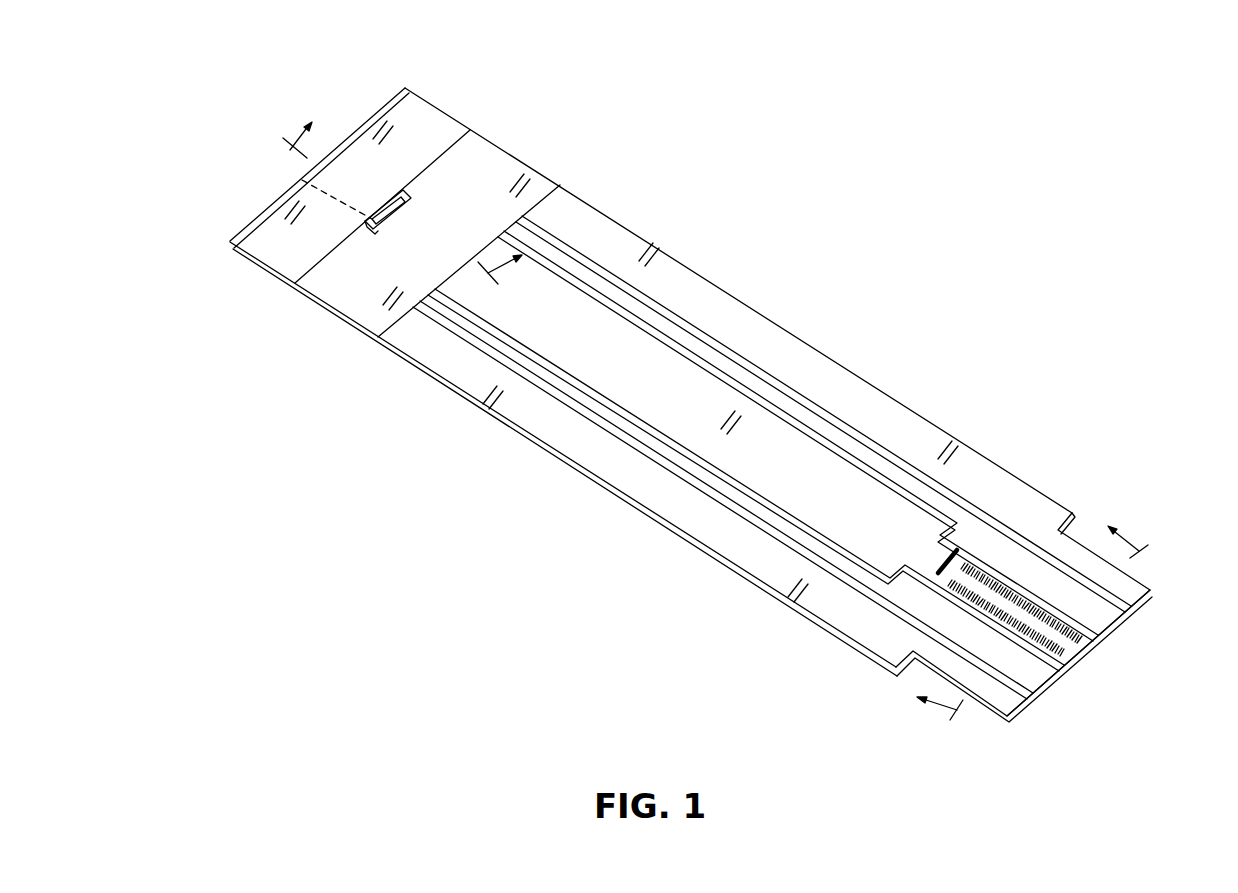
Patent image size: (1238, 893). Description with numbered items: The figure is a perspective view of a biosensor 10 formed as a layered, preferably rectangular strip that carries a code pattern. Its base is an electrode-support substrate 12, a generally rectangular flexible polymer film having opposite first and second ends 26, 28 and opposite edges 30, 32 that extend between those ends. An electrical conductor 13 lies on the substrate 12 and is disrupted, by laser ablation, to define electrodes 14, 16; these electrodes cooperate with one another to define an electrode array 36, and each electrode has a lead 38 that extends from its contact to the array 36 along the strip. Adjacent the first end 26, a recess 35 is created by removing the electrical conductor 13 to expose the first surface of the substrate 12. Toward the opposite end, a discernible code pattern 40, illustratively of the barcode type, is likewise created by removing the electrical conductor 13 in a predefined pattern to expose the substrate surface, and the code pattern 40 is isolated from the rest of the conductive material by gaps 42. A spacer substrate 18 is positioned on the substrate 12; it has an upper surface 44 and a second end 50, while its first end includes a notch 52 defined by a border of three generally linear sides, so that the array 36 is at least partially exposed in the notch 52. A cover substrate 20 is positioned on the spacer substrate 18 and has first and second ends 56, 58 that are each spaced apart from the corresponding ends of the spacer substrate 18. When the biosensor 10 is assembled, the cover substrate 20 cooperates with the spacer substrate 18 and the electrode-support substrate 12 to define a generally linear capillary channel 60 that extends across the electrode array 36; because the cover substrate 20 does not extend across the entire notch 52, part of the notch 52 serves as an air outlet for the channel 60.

The biosensor 10 is at (745, 188).
The electrode-support substrate 12 is at (823, 700).
The electrical conductor 13 is at (797, 368).
The electrode 14 is at (766, 530).
The electrode 16 is at (850, 421).
The spacer substrate 18 is at (497, 165).
The cover substrate 20 is at (421, 117).
The first end 26 is at (231, 231).
The second end 28 is at (1114, 627).
The edge 30 is at (621, 495).
The edge 32 is at (898, 403).
The recess 35 is at (301, 178).
The electrode array 36 is at (392, 218).
The lead 38 is at (606, 265).
The code pattern 40 is at (1033, 580).
The gap 42 is at (1075, 638).
The upper surface 44 is at (443, 227).
The second end 50 is at (407, 312).
The notch 52 is at (382, 179).
The first end 56 is at (268, 207).
The second end 58 is at (336, 260).
The capillary channel 60 is at (362, 205).